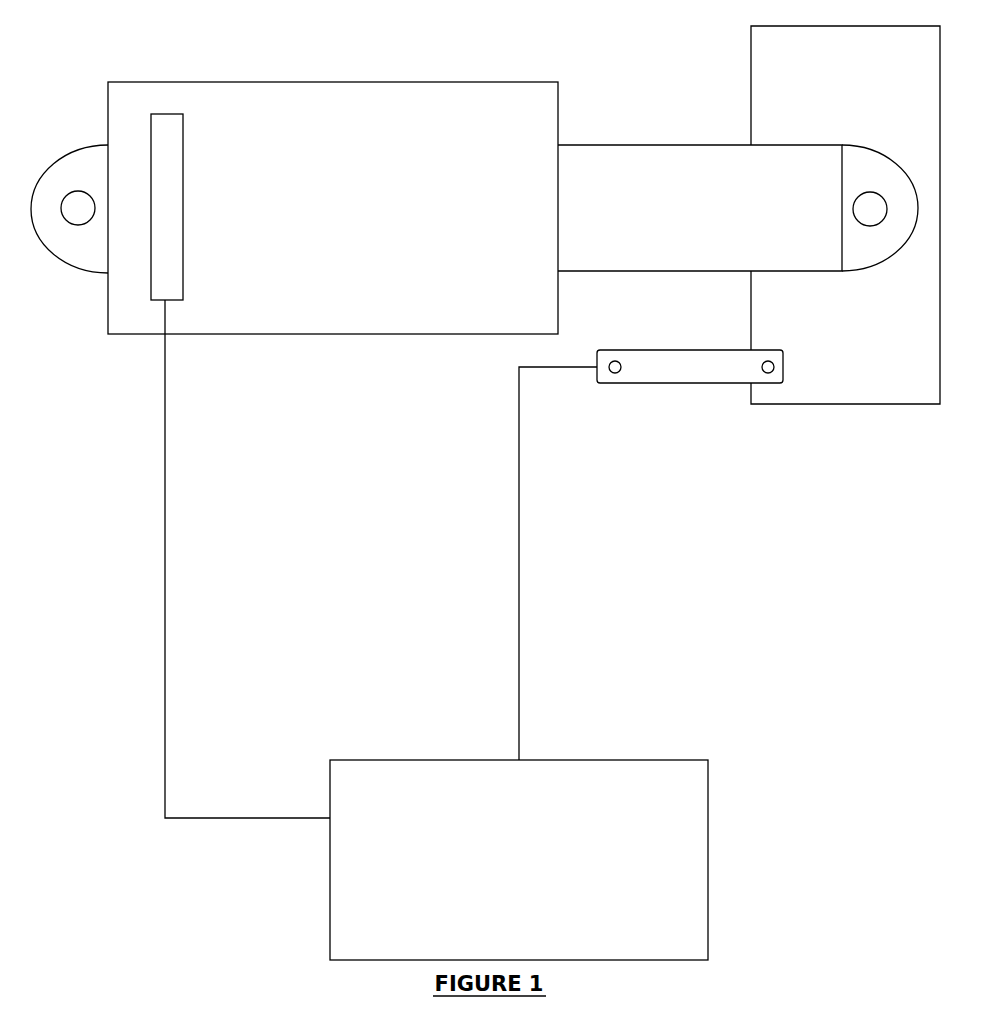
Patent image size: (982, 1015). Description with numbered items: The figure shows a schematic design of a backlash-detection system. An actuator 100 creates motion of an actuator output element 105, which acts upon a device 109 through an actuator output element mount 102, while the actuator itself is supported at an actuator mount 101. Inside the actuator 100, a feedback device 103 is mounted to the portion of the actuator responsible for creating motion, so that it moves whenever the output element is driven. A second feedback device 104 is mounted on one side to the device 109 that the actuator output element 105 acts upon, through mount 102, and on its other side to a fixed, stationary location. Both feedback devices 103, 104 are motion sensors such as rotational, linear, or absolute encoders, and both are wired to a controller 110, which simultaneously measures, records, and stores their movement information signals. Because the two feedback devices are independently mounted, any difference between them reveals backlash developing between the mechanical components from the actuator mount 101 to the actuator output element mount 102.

The actuator 100 is at (333, 208).
The actuator mount 101 is at (66, 229).
The actuator output element mount 102 is at (853, 226).
The feedback device 103 is at (142, 307).
The feedback device 104 is at (594, 392).
The actuator output element 105 is at (599, 182).
The device 109 is at (848, 70).
The controller 110 is at (519, 860).